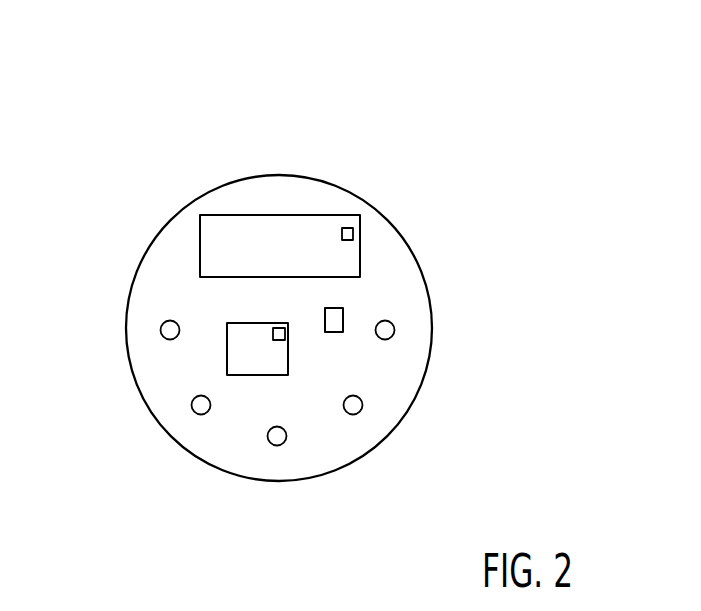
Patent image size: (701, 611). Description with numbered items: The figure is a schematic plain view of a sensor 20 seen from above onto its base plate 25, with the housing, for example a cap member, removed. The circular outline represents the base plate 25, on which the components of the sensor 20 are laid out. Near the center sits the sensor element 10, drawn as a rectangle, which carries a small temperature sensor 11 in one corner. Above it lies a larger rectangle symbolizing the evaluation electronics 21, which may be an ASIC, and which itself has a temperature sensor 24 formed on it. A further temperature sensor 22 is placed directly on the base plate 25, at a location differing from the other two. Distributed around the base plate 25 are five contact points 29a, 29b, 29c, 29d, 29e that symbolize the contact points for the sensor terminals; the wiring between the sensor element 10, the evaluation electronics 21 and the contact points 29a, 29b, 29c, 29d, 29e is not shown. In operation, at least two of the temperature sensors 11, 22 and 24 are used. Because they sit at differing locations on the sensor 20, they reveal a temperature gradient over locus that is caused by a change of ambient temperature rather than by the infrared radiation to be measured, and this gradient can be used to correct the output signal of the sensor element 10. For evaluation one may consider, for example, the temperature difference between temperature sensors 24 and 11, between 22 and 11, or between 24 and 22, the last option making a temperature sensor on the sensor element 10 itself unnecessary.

The sensor 20 is at (403, 138).
The base plate 25 is at (150, 282).
The evaluation electronics 21 is at (231, 226).
The temperature sensor 24 is at (354, 233).
The temperature sensor 22 is at (343, 318).
The sensor element 10 is at (231, 349).
The temperature sensor 11 is at (285, 336).
The contact point 29a is at (161, 330).
The contact point 29b is at (193, 413).
The contact point 29c is at (277, 445).
The contact point 29d is at (359, 411).
The contact point 29e is at (394, 330).